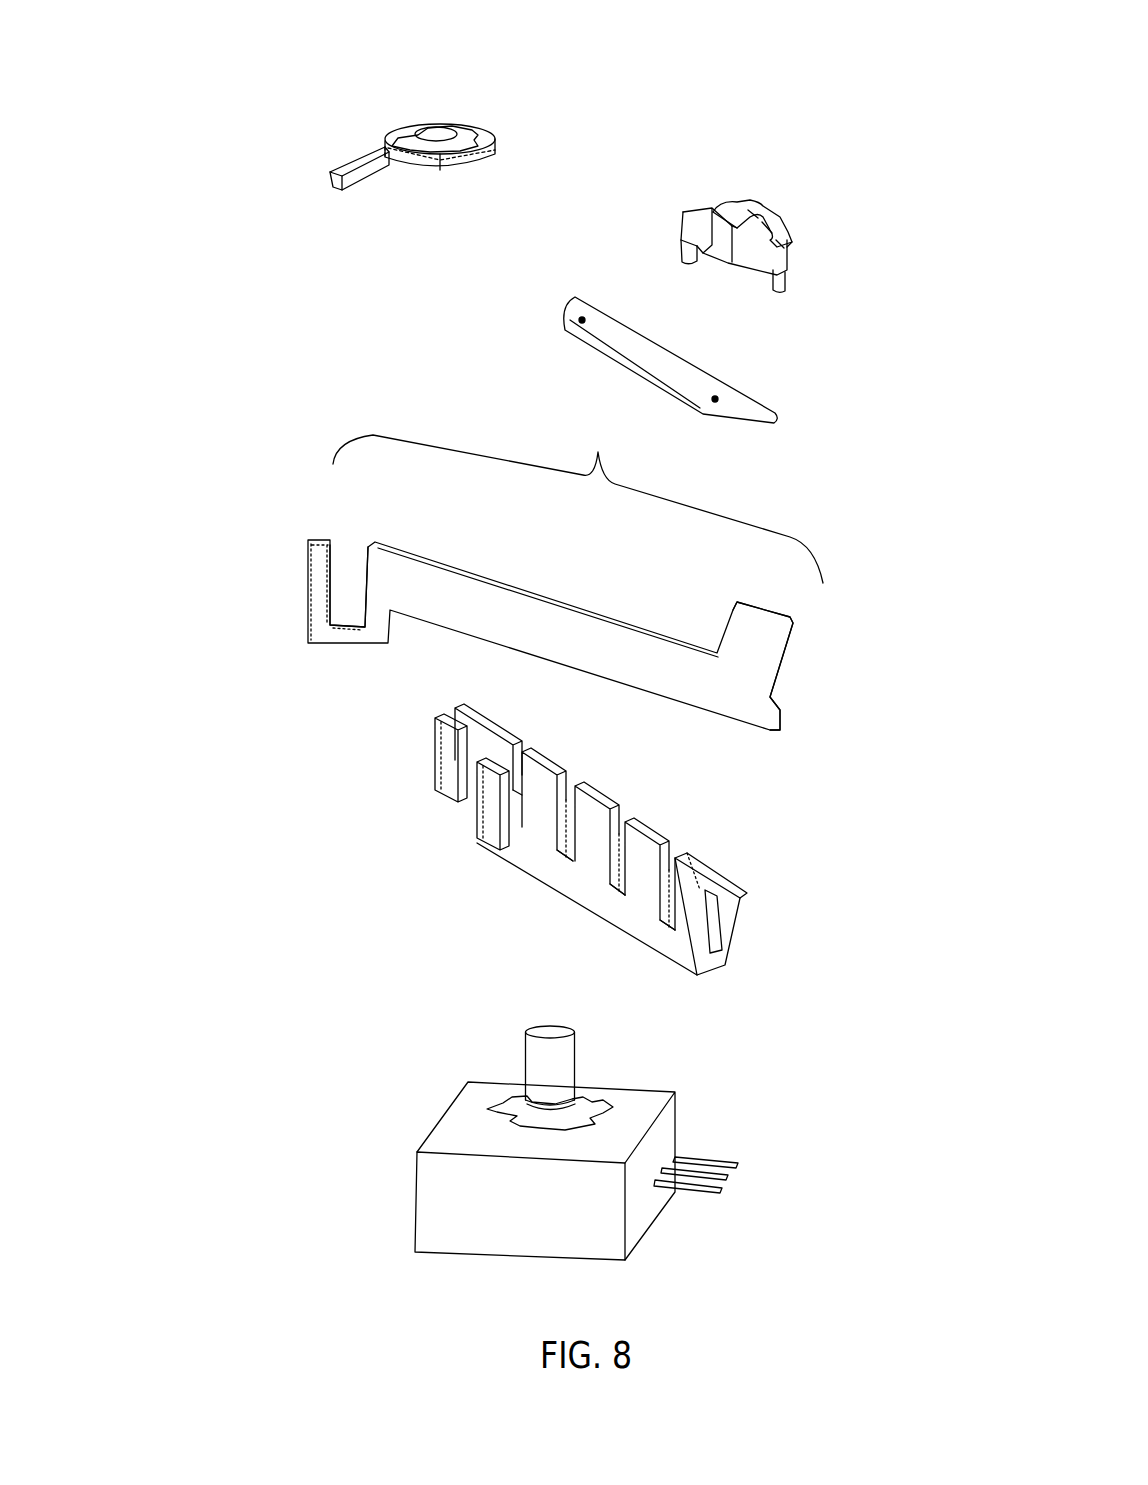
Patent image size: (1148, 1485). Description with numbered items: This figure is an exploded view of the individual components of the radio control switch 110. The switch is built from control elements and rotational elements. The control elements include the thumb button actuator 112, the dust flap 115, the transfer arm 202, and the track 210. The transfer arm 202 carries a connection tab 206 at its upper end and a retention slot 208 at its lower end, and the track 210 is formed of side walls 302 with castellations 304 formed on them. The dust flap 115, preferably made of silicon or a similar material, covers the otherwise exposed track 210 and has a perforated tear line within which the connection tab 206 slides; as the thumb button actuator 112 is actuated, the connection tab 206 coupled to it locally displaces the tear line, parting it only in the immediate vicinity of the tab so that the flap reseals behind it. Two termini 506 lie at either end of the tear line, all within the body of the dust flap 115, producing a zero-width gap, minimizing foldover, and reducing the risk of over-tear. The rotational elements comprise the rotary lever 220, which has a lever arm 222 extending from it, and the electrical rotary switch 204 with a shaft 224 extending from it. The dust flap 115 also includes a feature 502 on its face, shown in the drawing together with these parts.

The radio control switch 110 is at (222, 62).
The thumb button actuator 112 is at (781, 222).
The dust flap 115 is at (621, 316).
The transfer arm 202 is at (598, 456).
The electrical rotary switch 204 is at (430, 1206).
The connection tab 206 is at (768, 606).
The retention slot 208 is at (350, 548).
The track 210 is at (713, 981).
The rotary lever 220 is at (495, 154).
The lever arm 222 is at (345, 164).
The shaft 224 is at (569, 1059).
The side walls 302 is at (712, 876).
The castellations 304 is at (565, 876).
The ridge 502 is at (665, 361).
The termini 506 is at (568, 317).